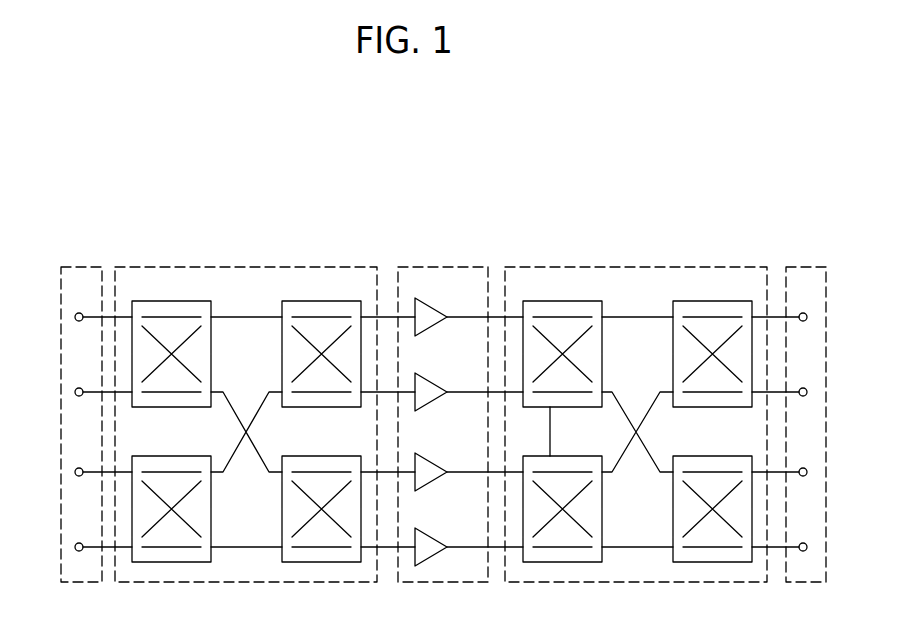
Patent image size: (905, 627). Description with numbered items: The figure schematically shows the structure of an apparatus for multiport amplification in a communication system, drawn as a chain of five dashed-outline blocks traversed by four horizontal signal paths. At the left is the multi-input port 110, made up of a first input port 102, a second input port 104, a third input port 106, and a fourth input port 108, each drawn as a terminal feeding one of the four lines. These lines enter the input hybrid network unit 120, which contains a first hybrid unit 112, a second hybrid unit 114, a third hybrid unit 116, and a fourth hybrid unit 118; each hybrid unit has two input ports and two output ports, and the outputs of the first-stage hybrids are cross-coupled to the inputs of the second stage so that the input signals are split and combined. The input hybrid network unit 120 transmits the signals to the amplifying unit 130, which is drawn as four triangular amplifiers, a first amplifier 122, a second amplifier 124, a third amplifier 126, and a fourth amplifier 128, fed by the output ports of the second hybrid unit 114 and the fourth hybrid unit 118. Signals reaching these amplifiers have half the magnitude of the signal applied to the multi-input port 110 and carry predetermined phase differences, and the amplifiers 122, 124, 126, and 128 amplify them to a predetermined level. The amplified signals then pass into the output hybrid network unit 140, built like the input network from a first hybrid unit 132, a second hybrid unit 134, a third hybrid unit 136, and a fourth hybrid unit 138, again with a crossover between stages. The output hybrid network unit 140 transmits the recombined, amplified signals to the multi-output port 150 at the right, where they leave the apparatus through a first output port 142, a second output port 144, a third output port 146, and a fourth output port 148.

The input port 1 102 is at (75, 317).
The input port 2 104 is at (75, 392).
The input port 3 106 is at (75, 472).
The input port 4 108 is at (75, 547).
The multi-input port 110 is at (88, 267).
The hybrid unit 1 112 is at (170, 301).
The hybrid unit 2 114 is at (320, 301).
The hybrid unit 3 116 is at (170, 456).
The hybrid unit 4 118 is at (320, 456).
The input hybrid network unit 120 is at (328, 267).
The amplifier 1 122 is at (427, 303).
The amplifier 2 124 is at (427, 378).
The amplifier 3 126 is at (427, 458).
The amplifier 4 128 is at (427, 533).
The amplifying unit 130 is at (440, 267).
The hybrid unit 1 132 is at (561, 301).
The hybrid unit 2 134 is at (711, 301).
The hybrid unit 3 136 is at (561, 456).
The hybrid unit 4 138 is at (711, 456).
The output hybrid network unit 140 is at (720, 267).
The output port 1 142 is at (807, 317).
The output port 2 144 is at (807, 392).
The output port 3 146 is at (807, 472).
The output port 4 148 is at (807, 547).
The multi-output port 150 is at (802, 267).